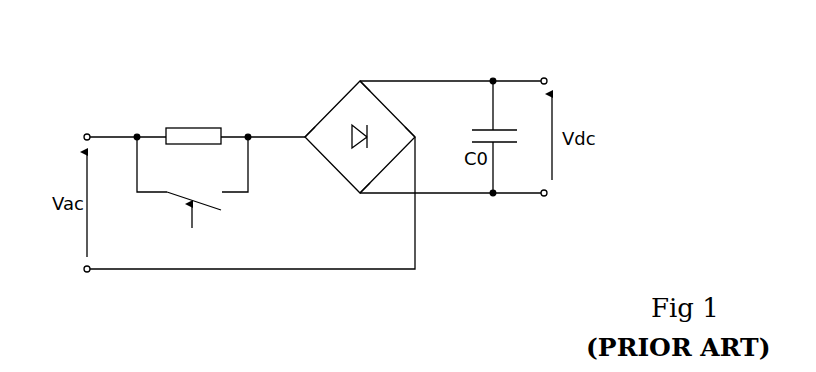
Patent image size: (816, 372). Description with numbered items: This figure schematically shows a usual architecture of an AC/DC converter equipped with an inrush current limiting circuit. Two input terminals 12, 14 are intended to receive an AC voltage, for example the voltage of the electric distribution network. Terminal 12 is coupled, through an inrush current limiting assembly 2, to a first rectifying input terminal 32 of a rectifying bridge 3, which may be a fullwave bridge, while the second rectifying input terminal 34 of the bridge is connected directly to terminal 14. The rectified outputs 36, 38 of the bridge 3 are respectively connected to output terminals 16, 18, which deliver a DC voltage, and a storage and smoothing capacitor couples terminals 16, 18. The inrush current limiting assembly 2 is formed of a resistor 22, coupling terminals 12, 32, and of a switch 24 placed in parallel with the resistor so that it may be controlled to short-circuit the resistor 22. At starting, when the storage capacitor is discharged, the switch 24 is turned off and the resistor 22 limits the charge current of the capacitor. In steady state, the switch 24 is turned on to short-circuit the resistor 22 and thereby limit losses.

The inrush current limiting assembly 2 is at (192, 125).
The rectifying bridge 3 is at (332, 106).
The input terminal 12 is at (87, 132).
The input terminal 14 is at (84, 270).
The output terminal 16 is at (548, 81).
The output terminal 18 is at (548, 193).
The resistor 22 is at (197, 127).
The switch 24 is at (192, 198).
The first rectifying input terminal 32 is at (305, 141).
The second rectifying input terminal 34 is at (418, 134).
The rectified output 36 is at (362, 79).
The rectified output 38 is at (358, 196).